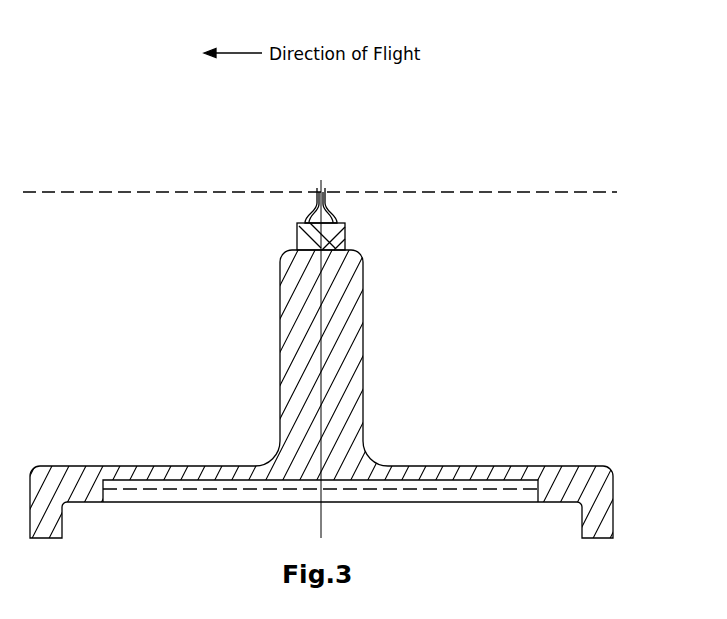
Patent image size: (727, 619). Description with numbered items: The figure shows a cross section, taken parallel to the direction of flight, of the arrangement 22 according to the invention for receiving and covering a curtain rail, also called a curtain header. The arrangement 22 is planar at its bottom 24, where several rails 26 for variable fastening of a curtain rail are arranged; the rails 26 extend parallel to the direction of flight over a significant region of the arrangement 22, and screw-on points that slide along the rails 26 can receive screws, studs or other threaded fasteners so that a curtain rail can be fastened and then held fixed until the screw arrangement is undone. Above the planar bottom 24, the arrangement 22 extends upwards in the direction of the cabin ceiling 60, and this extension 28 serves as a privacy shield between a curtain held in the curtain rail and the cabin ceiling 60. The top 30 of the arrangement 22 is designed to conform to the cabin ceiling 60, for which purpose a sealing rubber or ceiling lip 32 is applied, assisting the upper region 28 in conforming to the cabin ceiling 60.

The arrangement for receiving a curtain rail 22 is at (432, 174).
The bottom of the arrangement 24 is at (419, 518).
The rail 26 is at (455, 465).
The extension towards the cabin ceiling 28 is at (246, 366).
The top of the arrangement 30 is at (294, 177).
The sealing lip 32 is at (306, 222).
The cabin ceiling 60 is at (333, 192).